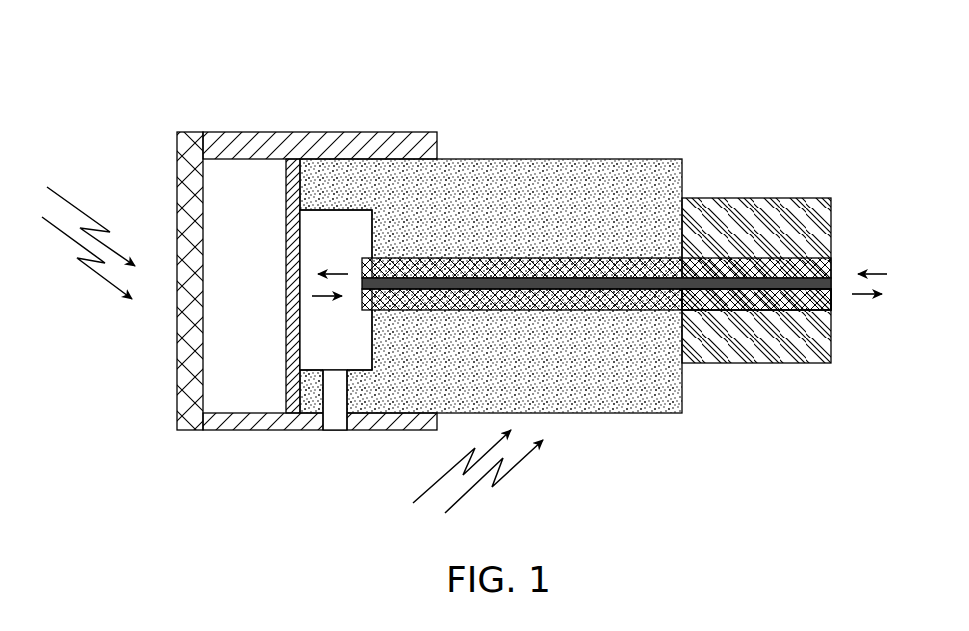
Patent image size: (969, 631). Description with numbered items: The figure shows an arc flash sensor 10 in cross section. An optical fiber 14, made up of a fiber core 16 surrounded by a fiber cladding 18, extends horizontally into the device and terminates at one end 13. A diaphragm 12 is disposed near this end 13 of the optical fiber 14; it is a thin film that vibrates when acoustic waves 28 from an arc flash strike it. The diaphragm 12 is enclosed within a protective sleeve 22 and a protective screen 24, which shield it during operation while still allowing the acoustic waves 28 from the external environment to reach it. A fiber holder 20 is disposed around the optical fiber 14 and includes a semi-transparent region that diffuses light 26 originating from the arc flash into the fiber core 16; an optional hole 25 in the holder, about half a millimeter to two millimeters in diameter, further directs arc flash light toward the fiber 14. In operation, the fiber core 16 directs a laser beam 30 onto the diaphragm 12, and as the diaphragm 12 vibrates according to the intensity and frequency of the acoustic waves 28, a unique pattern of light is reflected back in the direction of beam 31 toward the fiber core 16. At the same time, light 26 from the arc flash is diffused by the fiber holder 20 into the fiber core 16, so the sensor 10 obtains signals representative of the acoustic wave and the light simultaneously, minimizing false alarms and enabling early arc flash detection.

The sensor 10 is at (790, 57).
The diaphragm 12 is at (287, 186).
The end of optical fiber 13 is at (360, 258).
The optical fiber 14 is at (812, 258).
The fiber core 16 is at (800, 300).
The fiber cladding 18 is at (748, 308).
The fiber holder 20 is at (667, 413).
The protective sleeve 22 is at (427, 138).
The protective screen 24 is at (178, 404).
The optional hole 25 is at (338, 422).
The light 26 is at (518, 468).
The acoustic waves 28 is at (78, 212).
The laser beam 30 is at (333, 272).
The beam 31 is at (323, 298).